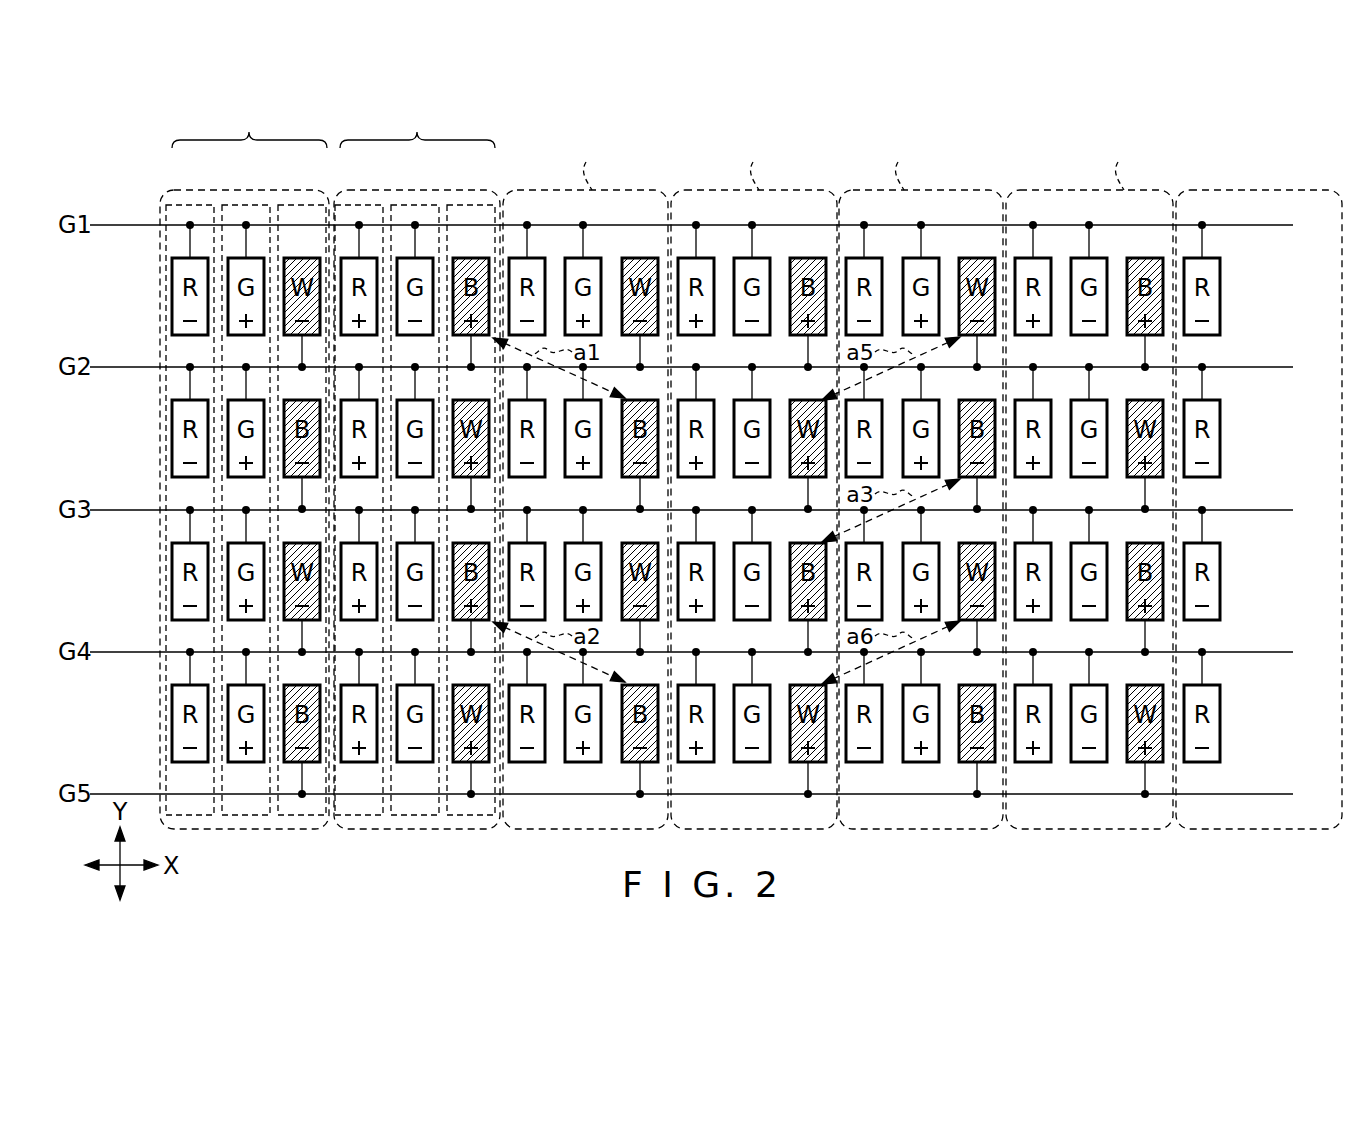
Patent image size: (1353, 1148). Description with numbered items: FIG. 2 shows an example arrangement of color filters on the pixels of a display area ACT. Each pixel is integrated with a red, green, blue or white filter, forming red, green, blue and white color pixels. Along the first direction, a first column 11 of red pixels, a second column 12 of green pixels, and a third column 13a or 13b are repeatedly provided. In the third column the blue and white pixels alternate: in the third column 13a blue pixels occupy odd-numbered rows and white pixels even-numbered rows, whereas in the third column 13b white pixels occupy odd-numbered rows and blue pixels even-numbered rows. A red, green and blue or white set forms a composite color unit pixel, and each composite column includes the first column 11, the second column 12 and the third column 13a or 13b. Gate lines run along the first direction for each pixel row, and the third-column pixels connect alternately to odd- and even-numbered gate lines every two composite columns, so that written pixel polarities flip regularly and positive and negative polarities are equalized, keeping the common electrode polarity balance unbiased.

The first column 11 is at (192, 205).
The second column 12 is at (248, 205).
The third column 13a is at (302, 205).
The third column 13b is at (471, 205).
The active area ACT is at (972, 130).